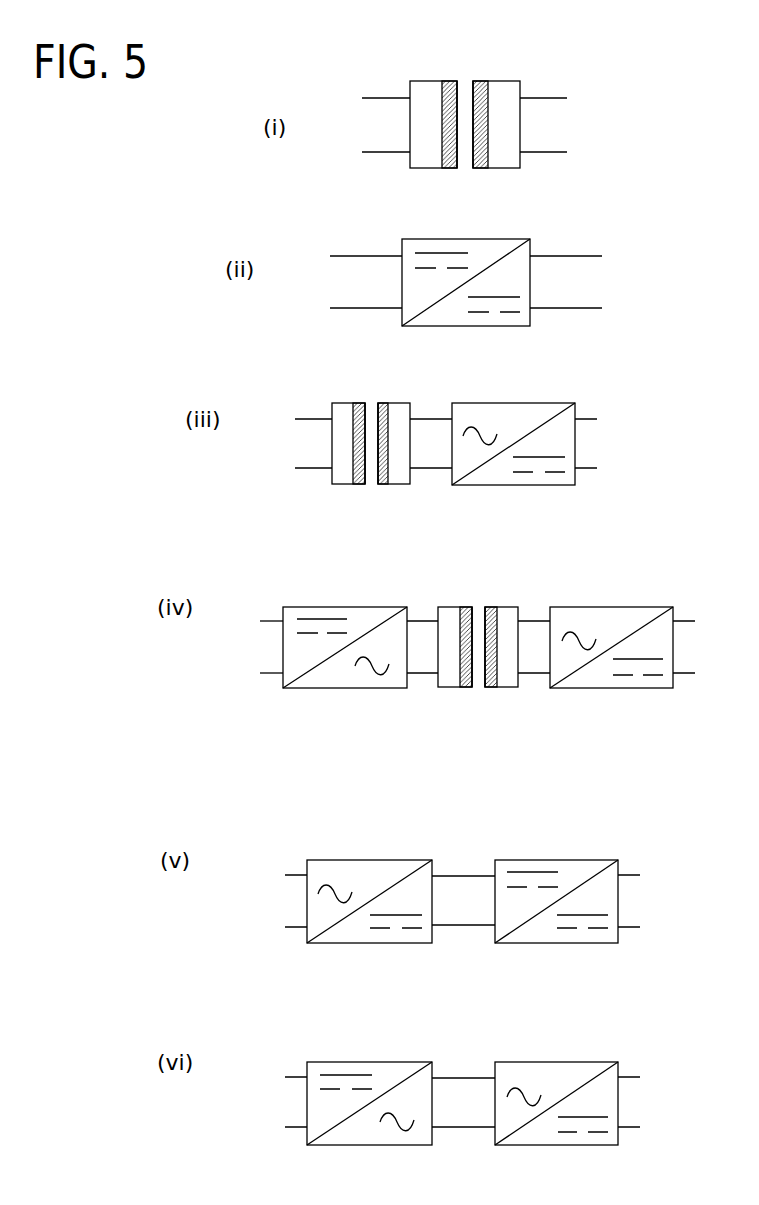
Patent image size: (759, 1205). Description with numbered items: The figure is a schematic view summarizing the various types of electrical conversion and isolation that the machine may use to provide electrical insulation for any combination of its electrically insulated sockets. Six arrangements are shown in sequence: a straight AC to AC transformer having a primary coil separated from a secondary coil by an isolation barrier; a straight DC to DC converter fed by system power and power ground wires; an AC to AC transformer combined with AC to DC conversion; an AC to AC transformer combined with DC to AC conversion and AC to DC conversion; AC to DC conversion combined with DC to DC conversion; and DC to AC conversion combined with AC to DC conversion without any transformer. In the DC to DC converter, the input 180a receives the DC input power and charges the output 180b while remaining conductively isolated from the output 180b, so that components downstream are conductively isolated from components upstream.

The input 180a is at (468, 253).
The output 180b is at (492, 317).